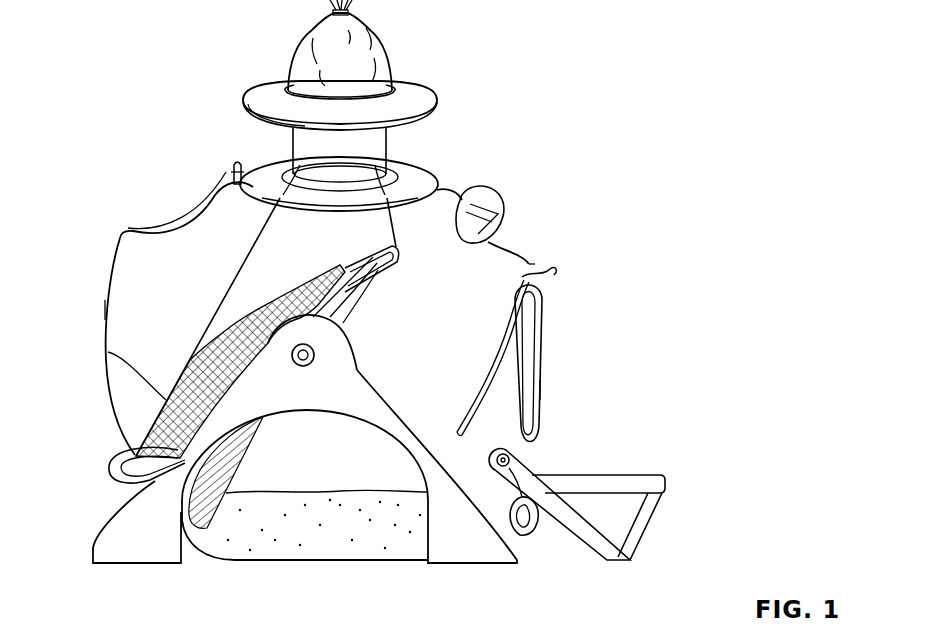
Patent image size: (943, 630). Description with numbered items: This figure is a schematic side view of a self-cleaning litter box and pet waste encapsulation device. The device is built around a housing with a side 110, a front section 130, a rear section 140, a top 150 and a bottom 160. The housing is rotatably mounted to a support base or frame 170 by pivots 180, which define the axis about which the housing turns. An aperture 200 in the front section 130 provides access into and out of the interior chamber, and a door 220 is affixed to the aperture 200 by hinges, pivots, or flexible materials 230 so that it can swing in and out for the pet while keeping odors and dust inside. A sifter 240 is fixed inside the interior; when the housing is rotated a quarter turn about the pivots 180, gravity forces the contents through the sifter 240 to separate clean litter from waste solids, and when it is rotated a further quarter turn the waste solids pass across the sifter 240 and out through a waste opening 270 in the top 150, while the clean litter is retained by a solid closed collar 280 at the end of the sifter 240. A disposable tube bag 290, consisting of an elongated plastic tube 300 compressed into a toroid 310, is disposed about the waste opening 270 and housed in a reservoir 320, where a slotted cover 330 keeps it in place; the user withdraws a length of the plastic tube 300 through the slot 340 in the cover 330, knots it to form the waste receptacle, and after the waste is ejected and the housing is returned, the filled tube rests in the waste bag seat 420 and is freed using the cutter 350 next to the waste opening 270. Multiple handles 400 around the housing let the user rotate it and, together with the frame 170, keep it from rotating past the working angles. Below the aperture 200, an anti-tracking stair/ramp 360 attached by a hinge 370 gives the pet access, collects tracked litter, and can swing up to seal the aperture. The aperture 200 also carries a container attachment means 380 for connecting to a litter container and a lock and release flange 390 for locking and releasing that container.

The side 110 is at (462, 368).
The front section 130 is at (529, 259).
The rear section 140 is at (106, 307).
The top 150 is at (245, 138).
The bottom 160 is at (293, 562).
The support base or frame 170 is at (328, 400).
The pivots 180 is at (323, 353).
The aperture 200 is at (535, 343).
The door 220 is at (463, 403).
The hinges, pivots, or flexible materials 230 is at (535, 264).
The sifter 240 is at (108, 352).
The waste opening 270 is at (367, 170).
The solid closed collar 280 is at (240, 283).
The tube bag 290 is at (433, 173).
The toroid 310 is at (340, 177).
The plastic tube 300 is at (380, 43).
The reservoir 320 is at (413, 203).
The slotted cover 330 is at (437, 100).
The slot 340 is at (288, 88).
The cutter 350 is at (232, 165).
The anti-tracking stair/ramp 360 is at (610, 557).
The hinge 370 is at (517, 460).
The container attachment means 380 is at (543, 393).
The lock and release flange 390 is at (555, 269).
The handles 400 is at (115, 470).
The waste bag seat 420 is at (148, 227).